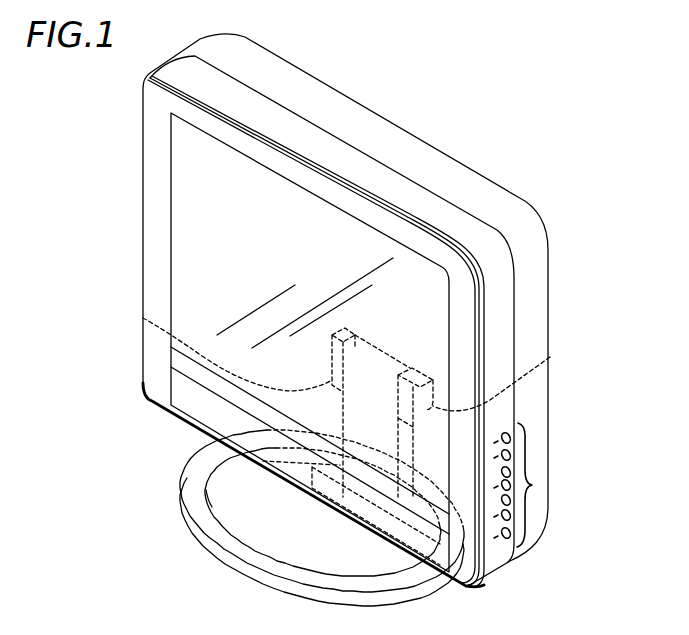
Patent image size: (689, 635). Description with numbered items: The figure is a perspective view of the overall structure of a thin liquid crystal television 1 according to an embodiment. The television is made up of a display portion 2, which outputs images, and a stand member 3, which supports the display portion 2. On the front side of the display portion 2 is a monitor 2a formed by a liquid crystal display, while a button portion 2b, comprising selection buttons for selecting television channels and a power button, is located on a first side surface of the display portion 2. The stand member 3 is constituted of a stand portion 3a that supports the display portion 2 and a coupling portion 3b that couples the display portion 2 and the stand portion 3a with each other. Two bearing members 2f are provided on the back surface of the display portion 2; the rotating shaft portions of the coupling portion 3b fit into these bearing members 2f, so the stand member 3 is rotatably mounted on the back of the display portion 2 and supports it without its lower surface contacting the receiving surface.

The thin liquid crystal television 1 is at (585, 130).
The display portion 2 is at (550, 288).
The monitor 2a is at (182, 203).
The button portion 2b is at (535, 485).
The bearing members 2f is at (143, 318).
The stand member 3 is at (200, 548).
The stand portion 3a is at (198, 490).
The coupling portion 3b is at (393, 356).